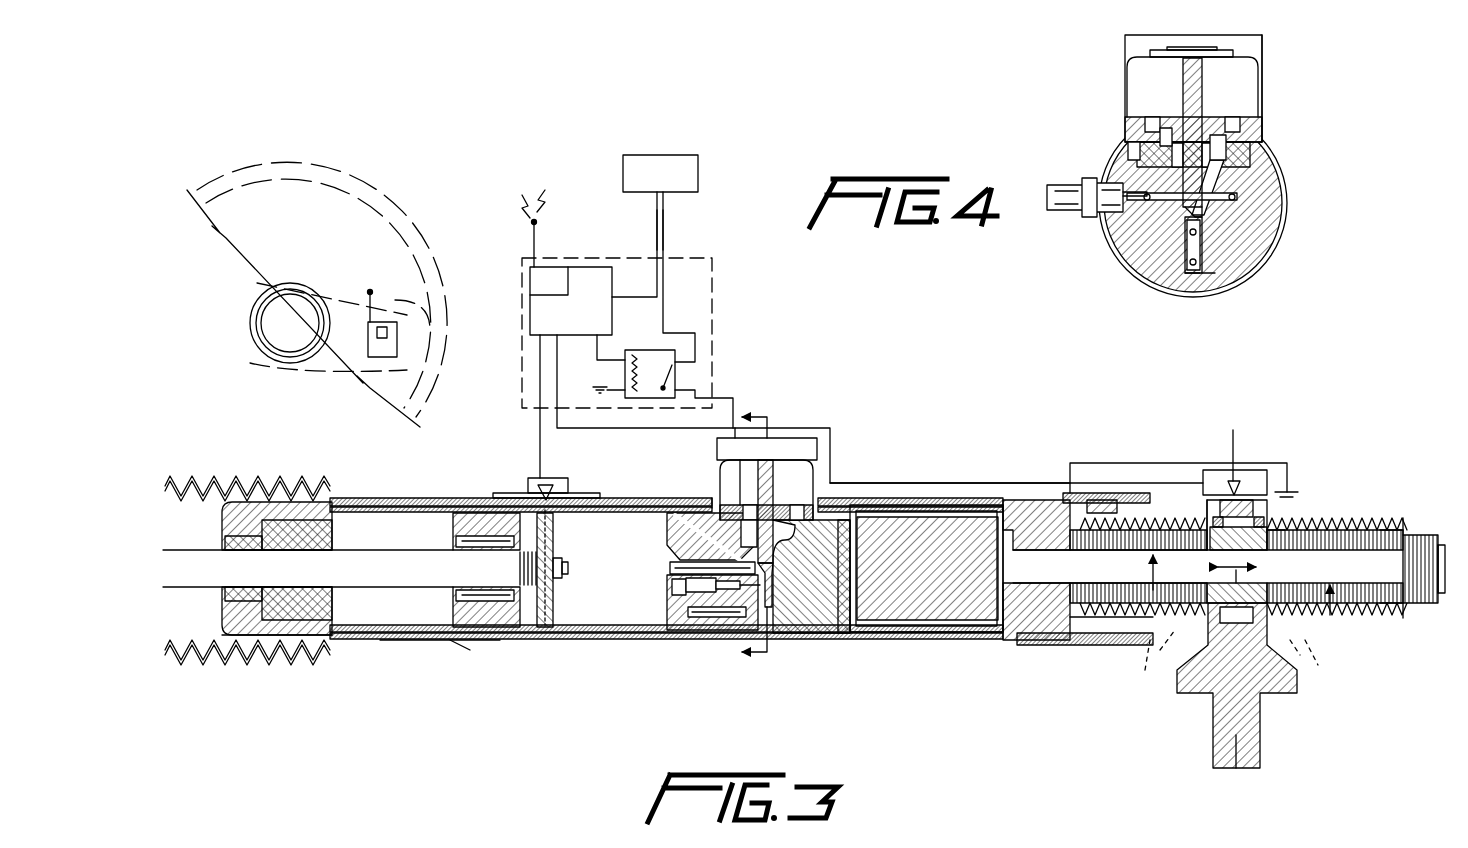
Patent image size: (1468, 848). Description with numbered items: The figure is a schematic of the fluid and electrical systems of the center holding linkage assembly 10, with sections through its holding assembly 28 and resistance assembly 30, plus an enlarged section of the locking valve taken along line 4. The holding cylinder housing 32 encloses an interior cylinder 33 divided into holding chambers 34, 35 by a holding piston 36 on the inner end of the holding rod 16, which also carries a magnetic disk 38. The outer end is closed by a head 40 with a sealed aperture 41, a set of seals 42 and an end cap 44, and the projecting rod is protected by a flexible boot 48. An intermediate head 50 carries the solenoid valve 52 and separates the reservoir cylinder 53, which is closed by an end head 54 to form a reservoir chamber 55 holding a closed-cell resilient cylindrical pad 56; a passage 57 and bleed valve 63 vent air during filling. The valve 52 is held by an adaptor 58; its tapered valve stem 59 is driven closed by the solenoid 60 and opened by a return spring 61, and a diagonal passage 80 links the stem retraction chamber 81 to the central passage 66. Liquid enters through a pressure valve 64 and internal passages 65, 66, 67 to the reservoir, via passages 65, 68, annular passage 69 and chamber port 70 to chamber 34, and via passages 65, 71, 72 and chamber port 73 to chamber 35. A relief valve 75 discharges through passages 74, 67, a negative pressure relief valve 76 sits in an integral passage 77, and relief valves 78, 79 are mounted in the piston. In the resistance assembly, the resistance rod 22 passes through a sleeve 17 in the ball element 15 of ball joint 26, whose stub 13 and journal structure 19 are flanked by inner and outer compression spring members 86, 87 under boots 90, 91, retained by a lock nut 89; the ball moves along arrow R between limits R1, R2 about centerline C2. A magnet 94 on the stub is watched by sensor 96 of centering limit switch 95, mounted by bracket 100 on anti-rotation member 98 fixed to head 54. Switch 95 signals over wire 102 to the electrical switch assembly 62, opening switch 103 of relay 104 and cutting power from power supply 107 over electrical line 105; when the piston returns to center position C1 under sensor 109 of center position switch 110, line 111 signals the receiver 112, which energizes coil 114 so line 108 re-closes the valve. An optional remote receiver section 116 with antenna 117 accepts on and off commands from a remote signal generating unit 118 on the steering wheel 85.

In FIG. 3, the linkage assembly 10 is at (918, 740).
In FIG. 3, the stub 13 is at (1262, 745).
In FIG. 3, the ball element 15 is at (1360, 518).
In FIG. 3, the holding rod 16 is at (308, 568).
In FIG. 3, the sleeve 17 is at (1330, 618).
In FIG. 3, the journal structure 19 is at (1285, 525).
In FIG. 3, the resistance rod 22 is at (1445, 580).
In FIG. 3, the ball joint 26 is at (1203, 503).
In FIG. 3, the holding assembly 28 is at (437, 745).
In FIG. 3, the resistance assembly 30 is at (1093, 745).
In FIG. 3, the holding cylinder housing 32 is at (378, 640).
In FIG. 4, the holding cylinder housing 32 is at (1270, 255).
In FIG. 3, the interior cylinder 33 is at (420, 640).
In FIG. 3, the holding chamber 34 is at (395, 515).
In FIG. 3, the holding chamber 35 is at (589, 569).
In FIG. 3, the holding piston 36 is at (460, 520).
In FIG. 3, the magnetic disk 38 is at (565, 640).
In FIG. 3, the head 40 is at (320, 640).
In FIG. 3, the aperture 41 is at (262, 665).
In FIG. 3, the seals 42 is at (240, 595).
In FIG. 3, the end cap 44 is at (222, 525).
In FIG. 3, the flexible boot 48 is at (215, 470).
In FIG. 3, the intermediate head 50 is at (820, 640).
In FIG. 4, the intermediate head 50 is at (1148, 268).
In FIG. 3, the solenoid valve 52 is at (822, 448).
In FIG. 4, the solenoid valve 52 is at (1270, 42).
In FIG. 3, the reservoir cylinder 53 is at (1003, 640).
In FIG. 3, the end head 54 is at (1075, 645).
In FIG. 3, the reservoir chamber 55 is at (860, 510).
In FIG. 3, the resilient cylindrical pad 56 is at (910, 530).
In FIG. 3, the passage 57 is at (1020, 640).
In FIG. 4, the adaptor 58 is at (1262, 125).
In FIG. 3, the tapered valve stem 59 is at (760, 470).
In FIG. 4, the tapered valve stem 59 is at (1210, 170).
In FIG. 3, the solenoid 60 is at (790, 470).
In FIG. 4, the solenoid 60 is at (1145, 80).
In FIG. 4, the return spring 61 is at (1205, 240).
In FIG. 3, the electrical switch assembly 62 is at (712, 270).
In FIG. 3, the bleed valve 63 is at (1040, 640).
In FIG. 4, the pressure valve 64 is at (1047, 195).
In FIG. 4, the internal passage 65 is at (1160, 205).
In FIG. 3, the central passage 66 is at (800, 640).
In FIG. 4, the central passage 66 is at (1205, 250).
In FIG. 3, the internal passage 67 is at (845, 640).
In FIG. 3, the internal passage 68 is at (730, 500).
In FIG. 4, the internal passage 68 is at (1130, 150).
In FIG. 3, the annular passage 69 is at (470, 500).
In FIG. 3, the chamber port 70 is at (300, 500).
In FIG. 3, the internal passage 71 is at (672, 590).
In FIG. 4, the internal passage 71 is at (1220, 190).
In FIG. 3, the internal passage 72 is at (680, 540).
In FIG. 3, the chamber port 73 is at (672, 520).
In FIG. 3, the internal passage 74 is at (677, 640).
In FIG. 3, the relief valve 75 is at (725, 640).
In FIG. 4, the relief valve 75 is at (1225, 280).
In FIG. 3, the negative pressure relief valve 76 is at (700, 640).
In FIG. 4, the negative pressure relief valve 76 is at (1185, 275).
In FIG. 3, the integral passage 77 is at (775, 640).
In FIG. 3, the relief valve 78 is at (582, 495).
In FIG. 3, the pressure relief valve 79 is at (455, 640).
In FIG. 4, the diagonal passage 80 is at (1255, 155).
In FIG. 4, the stem retraction chamber 81 is at (1160, 140).
In FIG. 3, the steering wheel 85 is at (345, 170).
In FIG. 3, the inner compression spring member 86 is at (1120, 645).
In FIG. 3, the outer compression spring member 87 is at (1370, 618).
In FIG. 3, the lock nut 89 is at (1430, 605).
In FIG. 3, the flexible boot 90 is at (1110, 500).
In FIG. 3, the flexible boot 91 is at (1395, 528).
In FIG. 3, the magnet 94 is at (1255, 505).
In FIG. 3, the centering limit switch 95 is at (1215, 470).
In FIG. 3, the sensor 96 is at (1280, 470).
In FIG. 3, the anti-rotation member 98 is at (1095, 493).
In FIG. 3, the bracket 100 is at (665, 203).
In FIG. 4, the bracket 100 is at (1148, 35).
In FIG. 3, the wire 102 is at (985, 483).
In FIG. 3, the switch 103 is at (675, 375).
In FIG. 3, the relay 104 is at (665, 350).
In FIG. 3, the electrical line 105 is at (655, 220).
In FIG. 3, the power supply 107 is at (655, 258).
In FIG. 3, the line 108 is at (740, 390).
In FIG. 3, the sensor 109 is at (528, 485).
In FIG. 3, the center position switch 110 is at (540, 460).
In FIG. 3, the electrical line 111 is at (540, 420).
In FIG. 3, the receiver 112 is at (571, 301).
In FIG. 3, the coil 114 is at (557, 370).
In FIG. 3, the remote receiver section 116 is at (540, 280).
In FIG. 3, the antenna 117 is at (534, 225).
In FIG. 3, the remote signal generating unit 118 is at (365, 345).
In FIG. 3, the section line 4 is at (753, 536).
In FIG. 3, the center position C1 is at (545, 640).
In FIG. 3, the centerline C2 is at (1240, 790).
In FIG. 3, the arrow R is at (1305, 680).
In FIG. 3, the limit R1 is at (1166, 685).
In FIG. 3, the limit R2 is at (1325, 670).